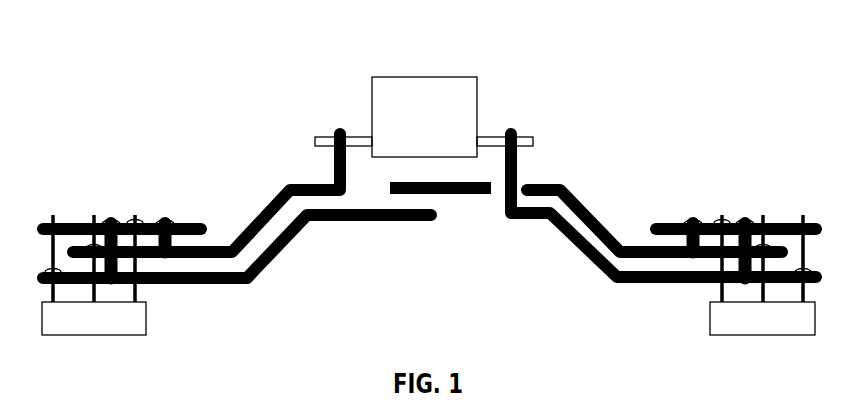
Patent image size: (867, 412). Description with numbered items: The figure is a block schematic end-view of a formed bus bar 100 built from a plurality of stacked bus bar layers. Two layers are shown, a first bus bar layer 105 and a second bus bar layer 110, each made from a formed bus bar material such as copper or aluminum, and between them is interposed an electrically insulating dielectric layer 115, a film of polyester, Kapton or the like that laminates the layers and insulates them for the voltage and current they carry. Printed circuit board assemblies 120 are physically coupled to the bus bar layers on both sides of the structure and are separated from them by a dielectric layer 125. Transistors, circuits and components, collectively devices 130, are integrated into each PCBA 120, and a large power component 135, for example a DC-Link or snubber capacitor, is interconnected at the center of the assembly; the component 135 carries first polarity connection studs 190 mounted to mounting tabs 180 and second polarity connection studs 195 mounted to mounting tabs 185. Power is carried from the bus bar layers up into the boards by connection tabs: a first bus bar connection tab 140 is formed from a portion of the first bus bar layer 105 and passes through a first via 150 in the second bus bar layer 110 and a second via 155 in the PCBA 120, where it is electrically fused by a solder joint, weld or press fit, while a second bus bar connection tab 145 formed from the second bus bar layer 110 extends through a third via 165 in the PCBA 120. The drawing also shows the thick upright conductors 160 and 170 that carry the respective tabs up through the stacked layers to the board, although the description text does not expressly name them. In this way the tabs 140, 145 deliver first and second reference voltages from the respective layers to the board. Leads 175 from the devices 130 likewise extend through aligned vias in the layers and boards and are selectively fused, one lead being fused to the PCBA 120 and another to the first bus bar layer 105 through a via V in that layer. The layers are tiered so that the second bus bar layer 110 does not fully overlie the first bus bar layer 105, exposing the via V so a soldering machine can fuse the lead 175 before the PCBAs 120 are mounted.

The formed bus bar 100 is at (697, 113).
The first bus bar layer 105 is at (247, 283).
The second bus bar layer 110 is at (313, 183).
The dielectric layer 115 is at (214, 264).
The printed circuit board assembly 120 is at (196, 219).
The dielectric layer 125 is at (205, 238).
The device 130 is at (428, 318).
The large power component 135 is at (424, 117).
The first bus bar connection tab 140 is at (108, 220).
The second bus bar connection tab 145 is at (166, 220).
The first via 150 is at (85, 223).
The second via 155 is at (93, 221).
The conductive via 160 is at (117, 222).
The third via 165 is at (174, 222).
The conductive via 170 is at (156, 220).
The lead 175 is at (56, 297).
The mounting tab 180 is at (515, 128).
The mounting tab 185 is at (338, 130).
The first polarity connection stud 190 is at (488, 136).
The second polarity connection stud 195 is at (360, 136).
The via V is at (46, 283).